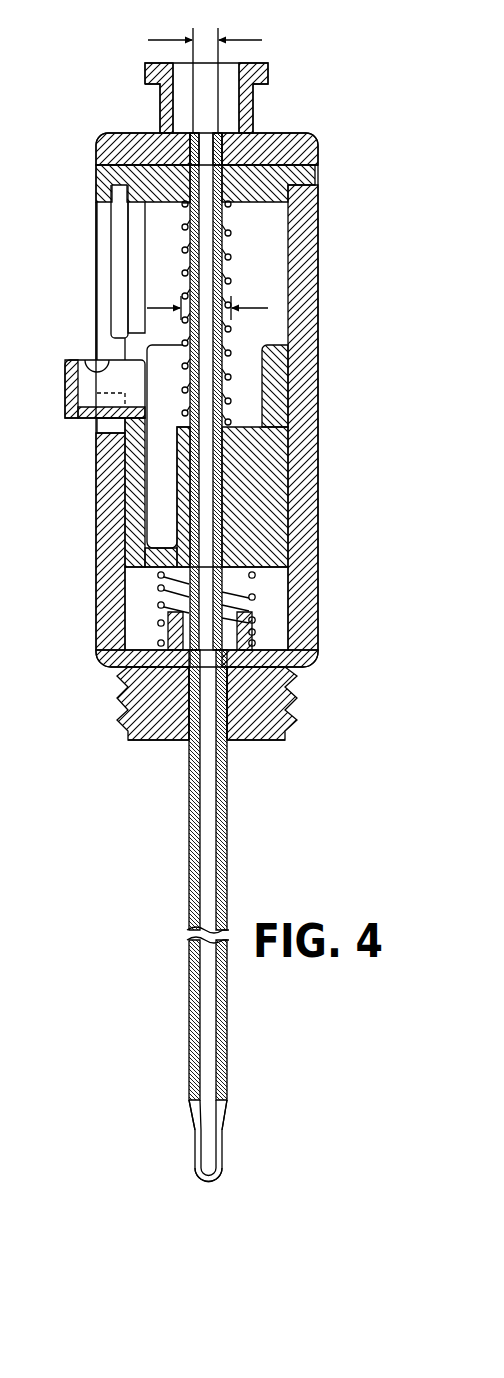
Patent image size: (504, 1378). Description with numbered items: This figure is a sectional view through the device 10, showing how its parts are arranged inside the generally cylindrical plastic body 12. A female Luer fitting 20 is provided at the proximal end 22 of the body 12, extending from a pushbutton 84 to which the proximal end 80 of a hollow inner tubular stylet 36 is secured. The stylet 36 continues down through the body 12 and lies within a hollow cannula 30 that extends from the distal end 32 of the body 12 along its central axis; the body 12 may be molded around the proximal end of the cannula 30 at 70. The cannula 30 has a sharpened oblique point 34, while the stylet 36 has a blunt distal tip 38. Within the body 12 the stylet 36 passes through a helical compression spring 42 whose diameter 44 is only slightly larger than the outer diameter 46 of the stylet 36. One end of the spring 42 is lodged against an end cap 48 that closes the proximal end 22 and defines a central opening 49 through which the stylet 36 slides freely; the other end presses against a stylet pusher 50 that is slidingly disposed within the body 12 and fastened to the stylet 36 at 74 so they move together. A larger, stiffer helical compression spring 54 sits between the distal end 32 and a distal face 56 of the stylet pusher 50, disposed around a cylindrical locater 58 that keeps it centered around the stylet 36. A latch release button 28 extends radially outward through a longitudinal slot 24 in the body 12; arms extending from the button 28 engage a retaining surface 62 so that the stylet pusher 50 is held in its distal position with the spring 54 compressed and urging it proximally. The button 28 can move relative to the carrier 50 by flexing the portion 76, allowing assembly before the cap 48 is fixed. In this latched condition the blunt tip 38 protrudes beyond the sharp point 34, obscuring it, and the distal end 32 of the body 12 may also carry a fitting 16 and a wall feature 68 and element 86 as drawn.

The fluid dispensing device 10 is at (68, 152).
The body 12 is at (318, 476).
The threaded fitting 16 is at (118, 700).
The female Luer fitting 20 is at (268, 65).
The proximal end 22 is at (318, 205).
The longitudinal slot 24 is at (97, 230).
The latch release button 28 is at (65, 390).
The cannula 30 is at (190, 827).
The distal end 32 is at (260, 742).
The oblique point 34 is at (228, 1110).
The tubular stylet 36 is at (228, 247).
The blunt distal tip 38 is at (207, 1183).
The helical compression spring 42 is at (232, 308).
The spring diameter 44 is at (177, 314).
The outer diameter 46 is at (168, 37).
The end cap 48 is at (320, 174).
The central opening 49 is at (180, 202).
The stylet pusher 50 is at (268, 342).
The helical compression spring 54 is at (163, 603).
The distal face 56 is at (290, 582).
The locater 58 is at (248, 625).
The retaining surface 62 is at (88, 364).
The left tube wall 68 is at (190, 157).
The molded region 70 is at (227, 683).
The fastening location 74 is at (227, 515).
The flexing portion 76 is at (125, 508).
The proximal end 80 is at (218, 130).
The pushbutton 84 is at (307, 133).
The column 86 is at (118, 283).